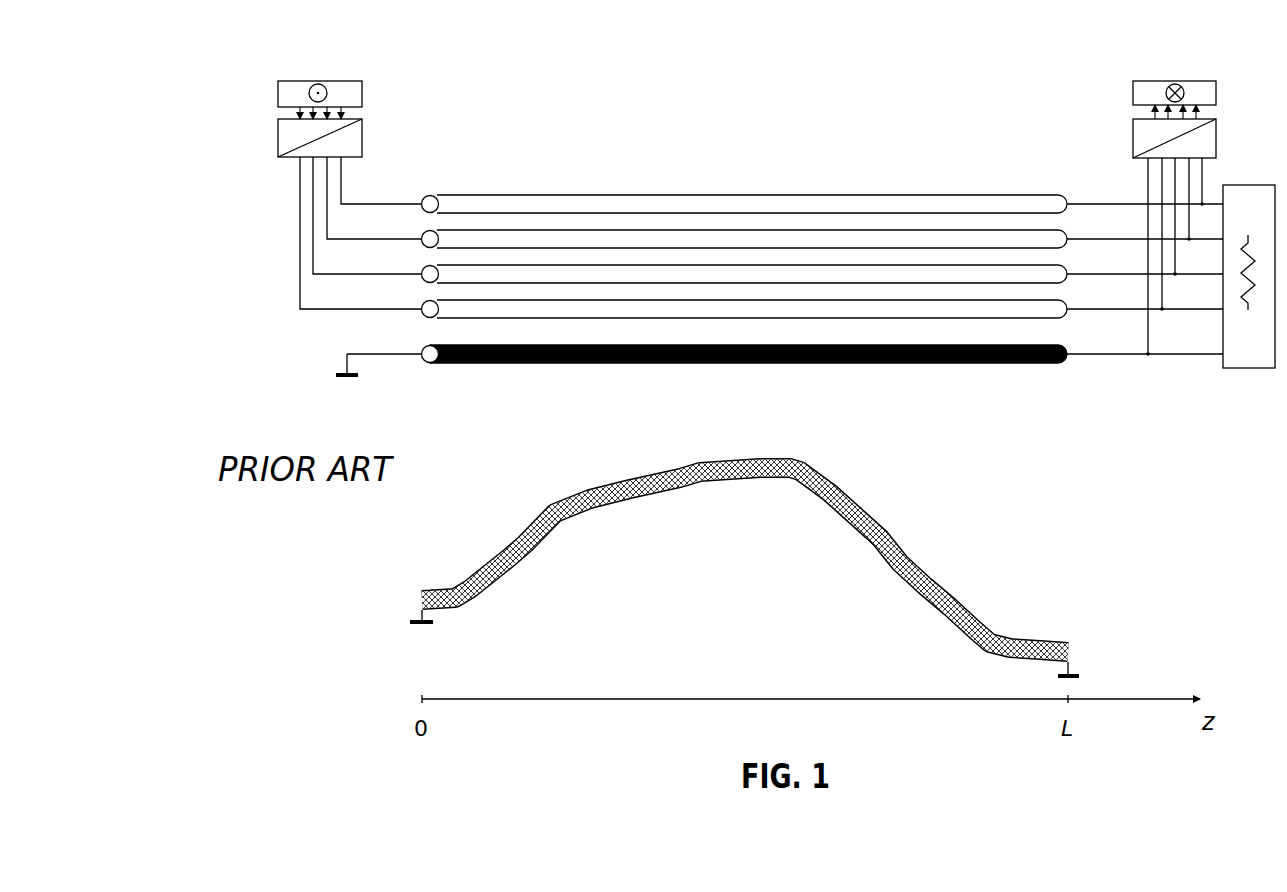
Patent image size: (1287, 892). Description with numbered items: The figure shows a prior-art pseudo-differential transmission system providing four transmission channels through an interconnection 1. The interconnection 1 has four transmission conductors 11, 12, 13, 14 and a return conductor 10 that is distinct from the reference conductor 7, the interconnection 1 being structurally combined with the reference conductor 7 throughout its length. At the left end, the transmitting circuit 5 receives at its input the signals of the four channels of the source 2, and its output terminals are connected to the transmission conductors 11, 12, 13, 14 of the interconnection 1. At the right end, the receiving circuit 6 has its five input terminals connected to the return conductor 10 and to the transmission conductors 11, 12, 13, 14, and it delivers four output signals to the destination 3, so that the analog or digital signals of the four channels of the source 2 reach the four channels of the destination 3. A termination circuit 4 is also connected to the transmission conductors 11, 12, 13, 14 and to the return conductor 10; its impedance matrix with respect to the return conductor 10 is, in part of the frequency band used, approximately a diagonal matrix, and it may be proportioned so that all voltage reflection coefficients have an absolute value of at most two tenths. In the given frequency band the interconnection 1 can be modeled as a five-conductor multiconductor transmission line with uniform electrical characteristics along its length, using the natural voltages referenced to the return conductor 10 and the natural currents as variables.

The interconnection 1 is at (664, 138).
The source 2 is at (320, 80).
The destination 3 is at (1176, 80).
The termination circuit 4 is at (1248, 183).
The transmitting circuit 5 is at (366, 145).
The receiving circuit 6 is at (1220, 141).
The reference conductor 7 is at (1081, 654).
The return conductor 10 is at (945, 366).
The transmission conductor 11 is at (1069, 196).
The transmission conductor 12 is at (1069, 231).
The transmission conductor 13 is at (1069, 266).
The transmission conductor 14 is at (1069, 301).